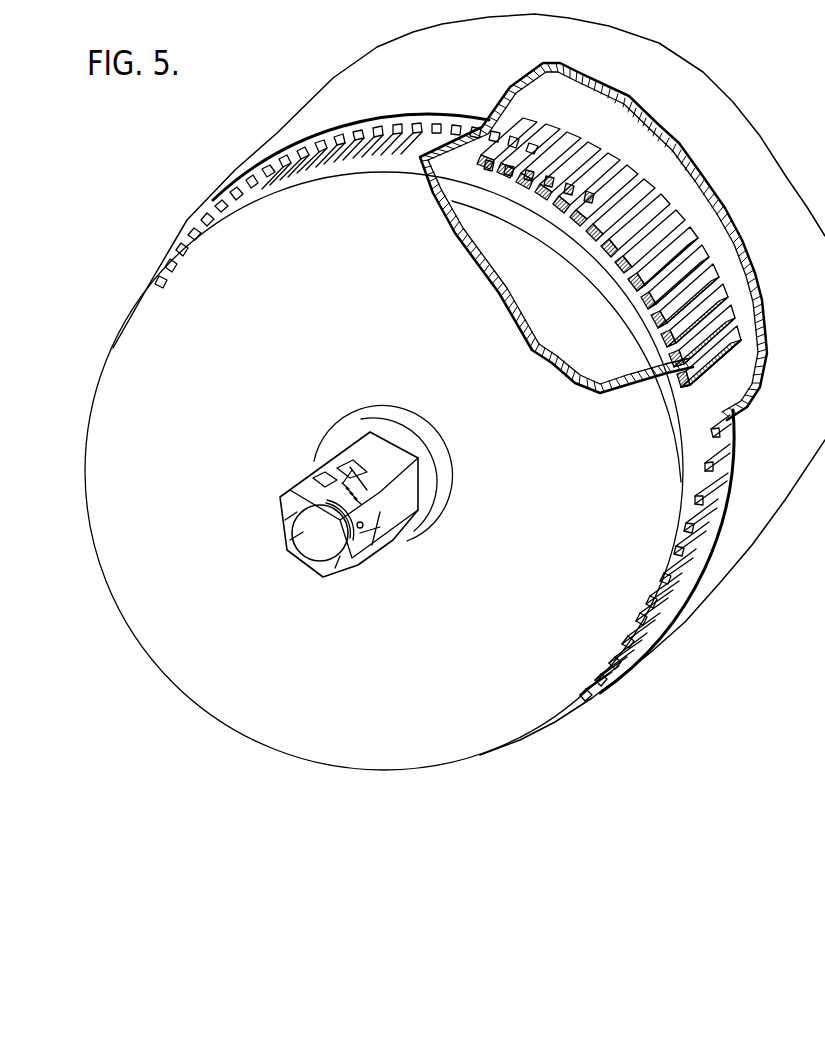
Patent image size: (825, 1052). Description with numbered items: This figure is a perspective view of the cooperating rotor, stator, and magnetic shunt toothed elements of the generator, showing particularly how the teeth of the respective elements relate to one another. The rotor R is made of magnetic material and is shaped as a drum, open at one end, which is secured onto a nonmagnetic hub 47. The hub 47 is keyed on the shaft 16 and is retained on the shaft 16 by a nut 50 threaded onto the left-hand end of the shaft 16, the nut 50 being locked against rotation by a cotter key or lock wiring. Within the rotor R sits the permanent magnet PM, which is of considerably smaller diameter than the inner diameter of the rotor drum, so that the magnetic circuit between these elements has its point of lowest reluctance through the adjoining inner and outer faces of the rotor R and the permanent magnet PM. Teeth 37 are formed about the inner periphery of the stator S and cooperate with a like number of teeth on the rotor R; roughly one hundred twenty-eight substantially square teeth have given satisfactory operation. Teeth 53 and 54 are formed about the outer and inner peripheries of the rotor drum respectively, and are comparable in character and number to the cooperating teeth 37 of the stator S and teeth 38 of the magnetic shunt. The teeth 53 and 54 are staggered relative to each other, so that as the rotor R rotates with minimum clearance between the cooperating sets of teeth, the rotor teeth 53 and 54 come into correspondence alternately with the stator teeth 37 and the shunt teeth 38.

The rotor R is at (97, 385).
The stator S is at (276, 134).
The permanent magnet PM is at (545, 272).
The shaft 16 is at (313, 557).
The teeth of the stator 37 is at (230, 200).
The teeth of the magnetic shunt 38 is at (672, 220).
The hub 47 is at (430, 505).
The nut 50 is at (388, 533).
The teeth of the outer periphery of the rotor drum 53 is at (593, 241).
The teeth of the inner periphery of the rotor drum 54 is at (518, 178).